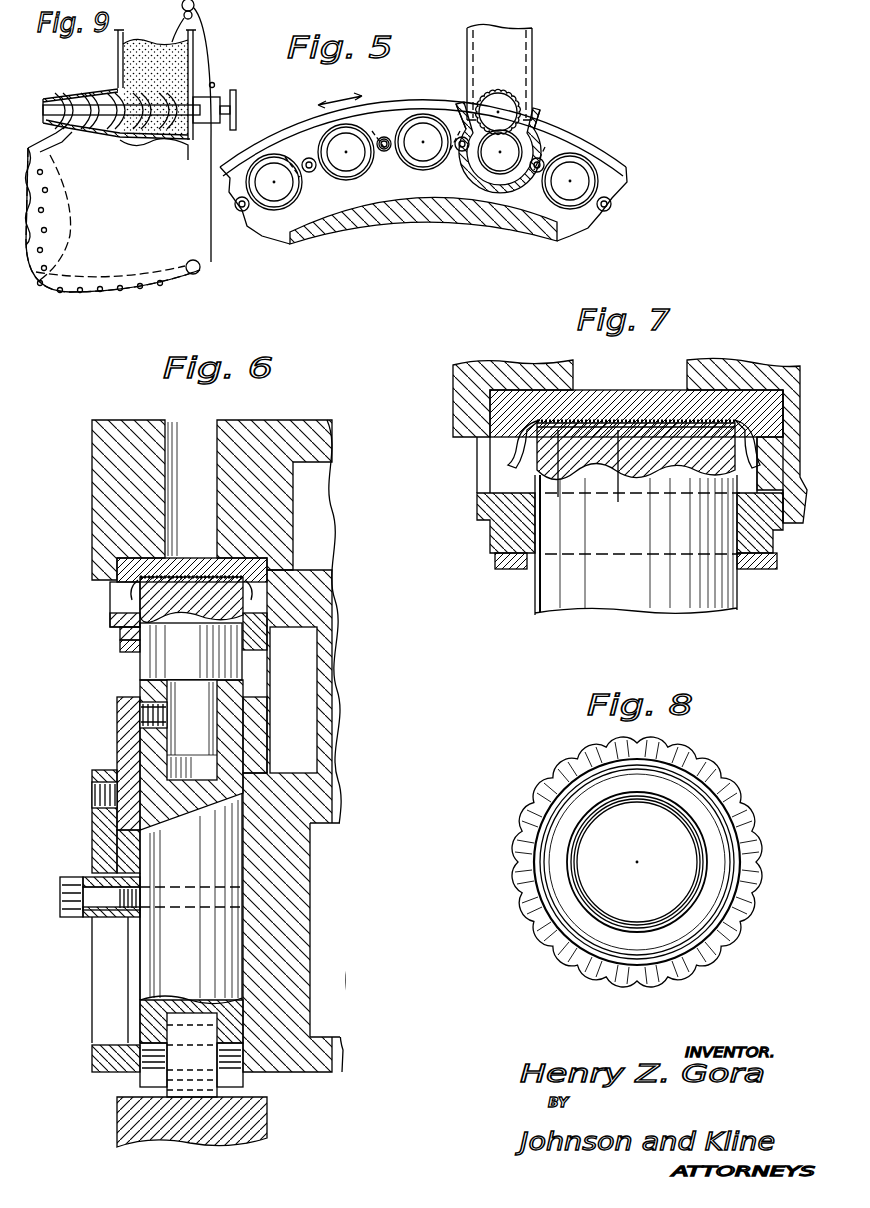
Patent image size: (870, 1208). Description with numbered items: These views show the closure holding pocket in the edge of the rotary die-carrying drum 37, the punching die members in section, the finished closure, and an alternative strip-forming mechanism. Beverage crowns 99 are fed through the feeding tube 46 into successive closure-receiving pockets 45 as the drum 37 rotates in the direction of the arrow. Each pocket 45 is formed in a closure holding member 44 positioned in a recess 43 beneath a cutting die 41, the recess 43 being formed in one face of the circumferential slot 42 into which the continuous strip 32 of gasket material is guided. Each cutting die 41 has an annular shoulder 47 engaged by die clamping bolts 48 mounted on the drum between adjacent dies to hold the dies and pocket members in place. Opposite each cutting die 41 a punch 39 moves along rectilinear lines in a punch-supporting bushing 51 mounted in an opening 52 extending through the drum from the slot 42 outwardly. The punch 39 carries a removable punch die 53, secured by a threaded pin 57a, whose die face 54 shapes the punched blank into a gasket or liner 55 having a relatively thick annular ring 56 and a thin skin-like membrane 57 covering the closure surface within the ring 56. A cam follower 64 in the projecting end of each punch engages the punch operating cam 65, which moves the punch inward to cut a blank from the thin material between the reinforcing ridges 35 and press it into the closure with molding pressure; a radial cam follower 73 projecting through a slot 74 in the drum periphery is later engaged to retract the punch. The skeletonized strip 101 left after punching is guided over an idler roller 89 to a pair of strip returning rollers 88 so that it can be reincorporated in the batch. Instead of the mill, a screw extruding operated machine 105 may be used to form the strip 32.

In FIG. 7, the strip 32 is at (535, 568).
In FIG. 6, the reinforcing ridges 35 is at (125, 652).
In FIG. 7, the reinforcing ridges 35 is at (505, 572).
In FIG. 9, the rotary die-carrying drum 37 is at (75, 217).
In FIG. 5, the rotary die-carrying drum 37 is at (425, 215).
In FIG. 6, the rotary die-carrying drum 37 is at (92, 522).
In FIG. 7, the rotary die-carrying drum 37 is at (460, 415).
In FIG. 6, the punch 39 is at (233, 692).
In FIG. 5, the cutting die 41 is at (348, 180).
In FIG. 6, the cutting die 41 is at (122, 632).
In FIG. 7, the cutting die 41 is at (505, 520).
In FIG. 5, the circumferential slot 42 is at (290, 240).
In FIG. 6, the circumferential slot 42 is at (314, 699).
In FIG. 6, the recess 43 is at (275, 593).
In FIG. 7, the recess 43 is at (800, 475).
In FIG. 5, the closure holding member 44 is at (512, 154).
In FIG. 6, the closure holding member 44 is at (262, 567).
In FIG. 7, the closure holding member 44 is at (737, 403).
In FIG. 5, the closure-receiving pocket 45 is at (530, 130).
In FIG. 6, the closure-receiving pocket 45 is at (120, 605).
In FIG. 7, the closure-receiving pocket 45 is at (491, 469).
In FIG. 5, the feeding tube 46 is at (534, 62).
In FIG. 5, the annular shoulder 47 is at (376, 160).
In FIG. 6, the annular shoulder 47 is at (267, 632).
In FIG. 7, the annular shoulder 47 is at (492, 543).
In FIG. 5, the die clamping bolts 48 is at (385, 152).
In FIG. 6, the punch-supporting bushing 51 is at (250, 1005).
In FIG. 6, the openings 52 is at (258, 944).
In FIG. 6, the punch die 53 is at (233, 660).
In FIG. 7, the punch die 53 is at (560, 600).
In FIG. 6, the die face 54 is at (170, 605).
In FIG. 7, the die face 54 is at (588, 430).
In FIG. 7, the gasket or liner 55 is at (618, 502).
In FIG. 8, the gasket or liner 55 is at (740, 901).
In FIG. 7, the annular ring 56 is at (558, 497).
In FIG. 8, the annular ring 56 is at (615, 785).
In FIG. 7, the skin-like membrane 57 is at (648, 423).
In FIG. 8, the skin-like membrane 57 is at (662, 895).
In FIG. 6, the threaded pin 57a is at (140, 715).
In FIG. 6, the cam follower 64 is at (145, 1078).
In FIG. 6, the punch operating cam 65 is at (255, 1122).
In FIG. 6, the cam follower 73 is at (73, 907).
In FIG. 6, the slots 74 is at (104, 999).
In FIG. 9, the strip returning rollers 88 is at (196, 5).
In FIG. 9, the idler roller 89 is at (201, 268).
In FIG. 5, the beverage crowns 99 is at (505, 120).
In FIG. 6, the beverage crowns 99 is at (203, 575).
In FIG. 7, the beverage crowns 99 is at (585, 420).
In FIG. 8, the beverage crowns 99 is at (567, 952).
In FIG. 9, the skeletonized strip 101 is at (115, 267).
In FIG. 9, the screw extruding operated machine 105 is at (88, 74).